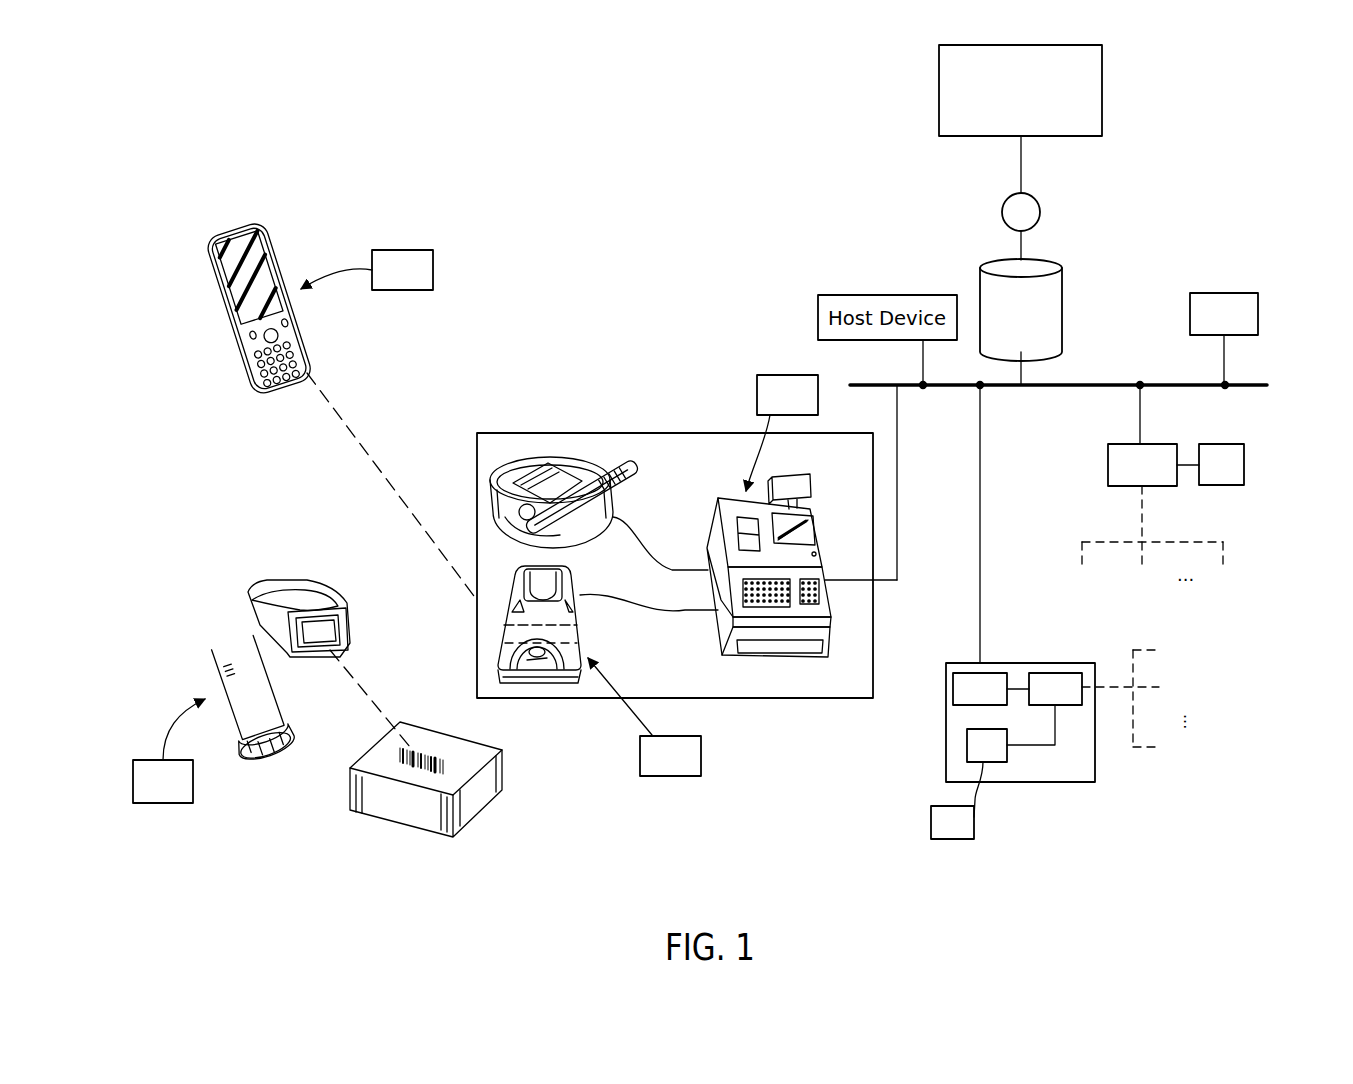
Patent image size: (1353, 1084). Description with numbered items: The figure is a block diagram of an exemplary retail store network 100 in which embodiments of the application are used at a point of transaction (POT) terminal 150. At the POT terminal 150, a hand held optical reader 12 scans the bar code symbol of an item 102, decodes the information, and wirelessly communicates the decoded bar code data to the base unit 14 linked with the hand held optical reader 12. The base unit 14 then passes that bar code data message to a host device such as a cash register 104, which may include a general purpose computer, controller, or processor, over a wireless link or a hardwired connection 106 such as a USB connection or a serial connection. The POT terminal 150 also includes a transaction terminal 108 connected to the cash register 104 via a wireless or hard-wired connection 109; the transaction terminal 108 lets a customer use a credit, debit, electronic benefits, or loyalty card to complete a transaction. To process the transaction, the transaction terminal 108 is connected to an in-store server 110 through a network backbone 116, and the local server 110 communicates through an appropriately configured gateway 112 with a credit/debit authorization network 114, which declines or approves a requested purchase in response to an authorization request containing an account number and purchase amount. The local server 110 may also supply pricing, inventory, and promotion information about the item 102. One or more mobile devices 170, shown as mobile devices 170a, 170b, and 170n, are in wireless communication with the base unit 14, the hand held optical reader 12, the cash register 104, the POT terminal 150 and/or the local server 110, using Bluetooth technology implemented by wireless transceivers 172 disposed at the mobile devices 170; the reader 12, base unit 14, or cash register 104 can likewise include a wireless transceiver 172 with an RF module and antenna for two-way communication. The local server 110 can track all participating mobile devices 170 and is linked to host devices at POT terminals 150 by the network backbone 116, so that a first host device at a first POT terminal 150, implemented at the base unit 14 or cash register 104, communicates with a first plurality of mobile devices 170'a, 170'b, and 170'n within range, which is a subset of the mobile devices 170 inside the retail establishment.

The retail store network 100 is at (549, 135).
The hand held optical reader 12 is at (226, 647).
The base unit 14 is at (547, 683).
The item 102 is at (472, 800).
The cash register 104 is at (828, 598).
The hardwired connection 106 is at (633, 603).
The transaction terminal 108 is at (530, 460).
The hard-wired connection 109 is at (640, 526).
The in-store server 110 is at (1063, 290).
The gateway 112 is at (1040, 215).
The credit/debit authorization network 114 is at (1102, 107).
The network backbone 116 is at (1075, 384).
The point of transaction (POT) terminal 150 is at (1228, 293).
The mobile devices 170 is at (271, 304).
The wireless transceiver 172 is at (475, 526).
The mobile device 170a is at (1081, 565).
The mobile device 170b is at (1152, 537).
The mobile device 170n is at (1227, 565).
The mobile device of first plurality 170'a is at (1169, 651).
The mobile device of first plurality 170'b is at (1143, 698).
The mobile device of first plurality 170'n is at (1169, 747).